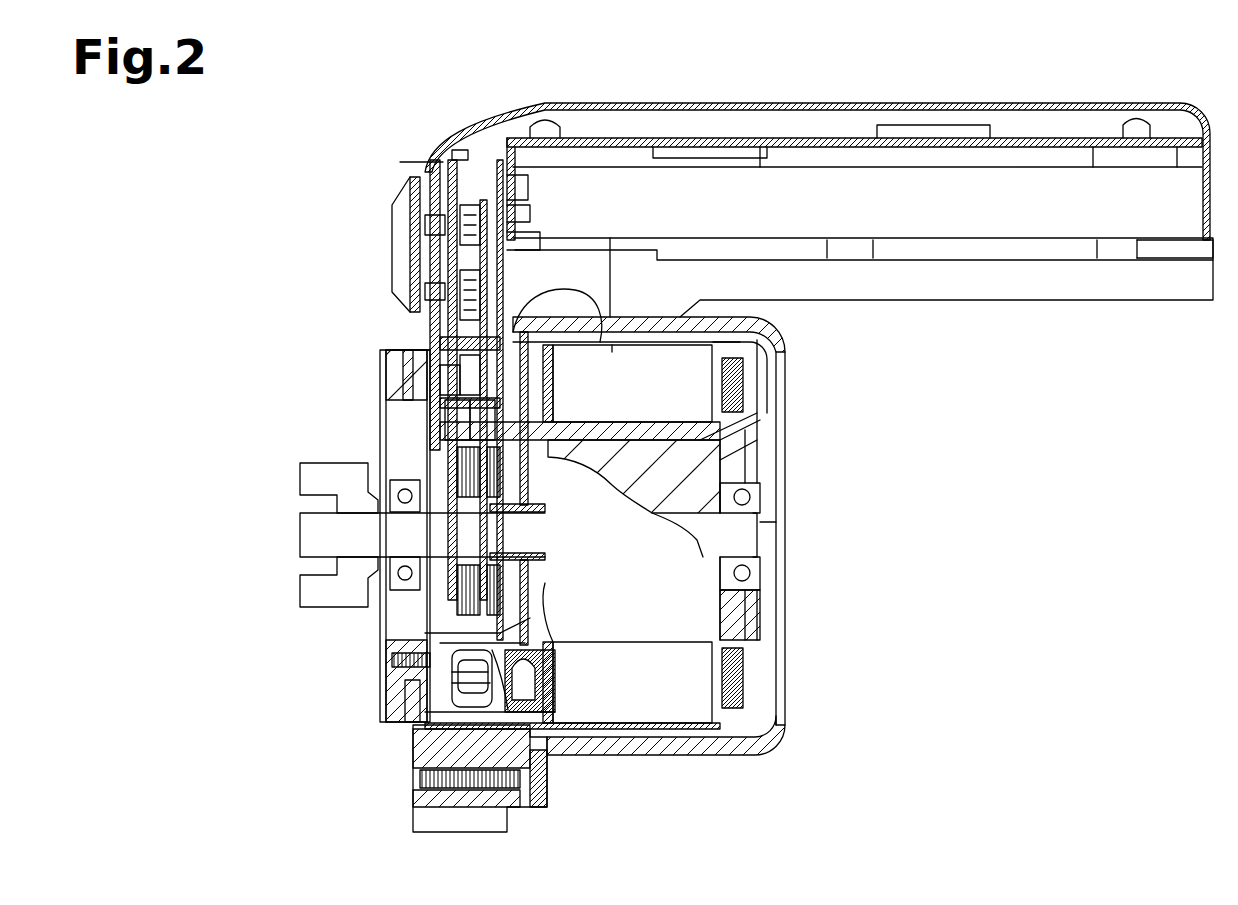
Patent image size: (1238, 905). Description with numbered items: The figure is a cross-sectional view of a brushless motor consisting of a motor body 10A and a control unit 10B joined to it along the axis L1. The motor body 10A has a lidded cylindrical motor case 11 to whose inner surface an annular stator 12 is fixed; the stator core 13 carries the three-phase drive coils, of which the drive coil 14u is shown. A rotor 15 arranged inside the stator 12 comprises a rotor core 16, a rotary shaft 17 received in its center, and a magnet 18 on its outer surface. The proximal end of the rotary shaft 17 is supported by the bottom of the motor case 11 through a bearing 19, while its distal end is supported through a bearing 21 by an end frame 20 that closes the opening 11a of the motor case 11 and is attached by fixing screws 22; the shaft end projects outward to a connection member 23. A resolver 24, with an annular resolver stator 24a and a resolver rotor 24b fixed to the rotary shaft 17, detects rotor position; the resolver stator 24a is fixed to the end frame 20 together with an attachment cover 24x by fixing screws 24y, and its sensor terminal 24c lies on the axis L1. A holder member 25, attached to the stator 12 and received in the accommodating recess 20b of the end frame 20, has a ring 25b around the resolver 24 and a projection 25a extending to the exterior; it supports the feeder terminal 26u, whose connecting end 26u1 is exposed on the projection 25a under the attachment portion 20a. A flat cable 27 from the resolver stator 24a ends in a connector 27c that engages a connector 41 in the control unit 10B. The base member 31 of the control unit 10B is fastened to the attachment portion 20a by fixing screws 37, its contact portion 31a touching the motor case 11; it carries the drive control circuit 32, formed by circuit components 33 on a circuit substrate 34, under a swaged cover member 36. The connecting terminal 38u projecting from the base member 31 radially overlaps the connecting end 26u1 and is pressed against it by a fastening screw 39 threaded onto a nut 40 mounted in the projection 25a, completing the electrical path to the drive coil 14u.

The motor body 10A is at (790, 410).
The control unit 10B is at (1043, 103).
The motor case 11 is at (780, 356).
The opening 11a is at (580, 392).
The stator 12 is at (660, 755).
The stator core 13 is at (662, 642).
The drive coil 14u is at (777, 664).
The rotor 15 is at (778, 604).
The rotor core 16 is at (775, 482).
The rotary shaft 17 is at (547, 540).
The magnet 18 is at (778, 455).
The bearing 19 is at (775, 577).
The end frame 20 is at (380, 680).
The attachment portion 20a is at (414, 176).
The accommodating recess 20b is at (395, 355).
The bearing 21 is at (375, 605).
The fixing screw 22 is at (550, 776).
The connection member 23 is at (300, 585).
The resolver 24 is at (310, 412).
The resolver stator 24a is at (440, 418).
The resolver rotor 24b is at (440, 436).
The sensor terminal 24c is at (425, 378).
The attachment cover 24x is at (545, 616).
The fixing screw 24y is at (390, 657).
The holder member 25 is at (420, 345).
The projection 25a is at (535, 300).
The ring 25b is at (410, 720).
The feeder terminal 26u is at (398, 292).
The connecting end 26u1 is at (398, 215).
The flat cable 27 is at (470, 140).
The connector 27c is at (520, 214).
The base member 31 is at (872, 300).
The contact portion 31a is at (628, 345).
The drive control circuit 32 is at (703, 138).
The circuit component 33 is at (677, 147).
The circuit substrate 34 is at (798, 138).
The cover member 36 is at (1012, 103).
The fixing screw 37 is at (395, 248).
The connecting terminal 38u is at (497, 190).
The fastening screw 39 is at (456, 152).
The nut 40 is at (513, 240).
The connector 41 is at (513, 190).
The axis L1 is at (790, 523).